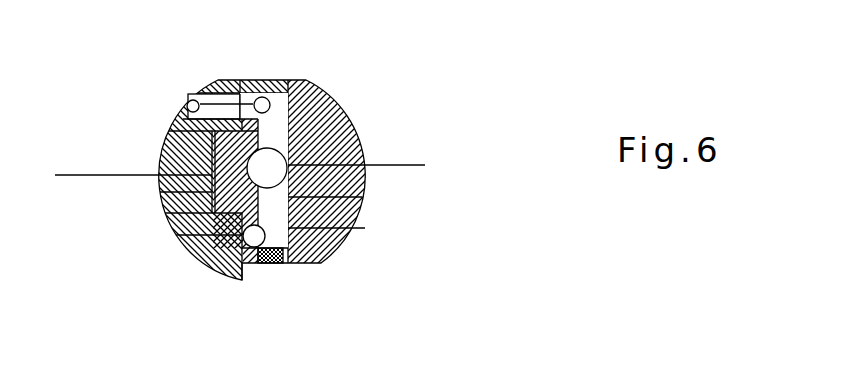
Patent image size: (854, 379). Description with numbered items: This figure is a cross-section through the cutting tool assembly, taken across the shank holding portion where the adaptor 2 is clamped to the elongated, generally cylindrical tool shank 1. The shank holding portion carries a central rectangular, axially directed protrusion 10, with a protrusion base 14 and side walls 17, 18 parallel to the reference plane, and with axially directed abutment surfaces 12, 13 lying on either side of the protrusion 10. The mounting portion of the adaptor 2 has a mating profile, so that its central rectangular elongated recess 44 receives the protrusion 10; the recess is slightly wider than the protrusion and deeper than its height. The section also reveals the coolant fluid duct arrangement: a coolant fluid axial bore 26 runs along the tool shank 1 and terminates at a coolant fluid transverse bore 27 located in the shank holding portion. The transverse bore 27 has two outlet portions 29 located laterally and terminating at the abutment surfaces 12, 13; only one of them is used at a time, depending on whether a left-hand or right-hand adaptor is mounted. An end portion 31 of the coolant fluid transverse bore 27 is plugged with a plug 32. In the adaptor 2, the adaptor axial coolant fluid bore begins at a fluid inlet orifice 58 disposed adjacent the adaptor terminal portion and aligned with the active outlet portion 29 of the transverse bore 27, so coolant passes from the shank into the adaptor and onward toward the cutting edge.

The tool shank 1 is at (293, 80).
The adaptor 2 is at (168, 133).
The protrusion 10 is at (178, 116).
The abutment surface 12 is at (217, 80).
The abutment surface 13 is at (183, 235).
The protrusion base 14 is at (212, 151).
The side wall 17 is at (340, 120).
The side wall 18 is at (173, 222).
The coolant fluid axial bore 26 is at (262, 165).
The coolant fluid transverse bore 27 is at (362, 197).
The outlet portion 29 is at (330, 102).
The end portion 31 is at (257, 254).
The plug 32 is at (283, 254).
The recess 44 is at (199, 180).
The fluid inlet orifice 58 is at (200, 90).